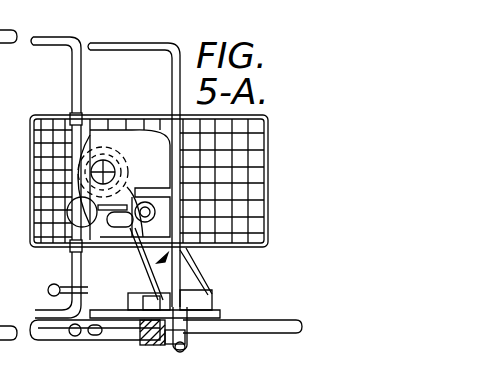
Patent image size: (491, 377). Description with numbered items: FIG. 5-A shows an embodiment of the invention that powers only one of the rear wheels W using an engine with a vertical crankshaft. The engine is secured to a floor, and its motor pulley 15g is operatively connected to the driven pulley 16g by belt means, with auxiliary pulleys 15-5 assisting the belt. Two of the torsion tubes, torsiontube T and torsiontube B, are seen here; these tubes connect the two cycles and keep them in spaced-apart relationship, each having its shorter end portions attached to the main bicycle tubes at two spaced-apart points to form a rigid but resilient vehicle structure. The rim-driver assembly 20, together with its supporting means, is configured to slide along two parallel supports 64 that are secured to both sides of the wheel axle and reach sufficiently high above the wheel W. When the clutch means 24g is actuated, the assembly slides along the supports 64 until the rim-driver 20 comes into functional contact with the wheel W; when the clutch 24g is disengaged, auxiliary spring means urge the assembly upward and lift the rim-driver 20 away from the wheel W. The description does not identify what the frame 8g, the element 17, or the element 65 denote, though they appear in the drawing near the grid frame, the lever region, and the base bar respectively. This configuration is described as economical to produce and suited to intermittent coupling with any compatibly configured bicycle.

The torsiontube T is at (72, 87).
The torsiontube B is at (128, 50).
The grid frame 8g is at (44, 116).
The motor pulley 15g is at (124, 160).
The lever 17 is at (152, 271).
The driven pulley 16g is at (147, 290).
The clutch means 24g is at (49, 280).
The auxiliary pulleys 15-5 is at (195, 290).
The rear wheel W is at (230, 305).
The parallel supports 64 is at (191, 332).
The base bar 65 is at (103, 335).
The rim-driver assembly 20 is at (150, 338).